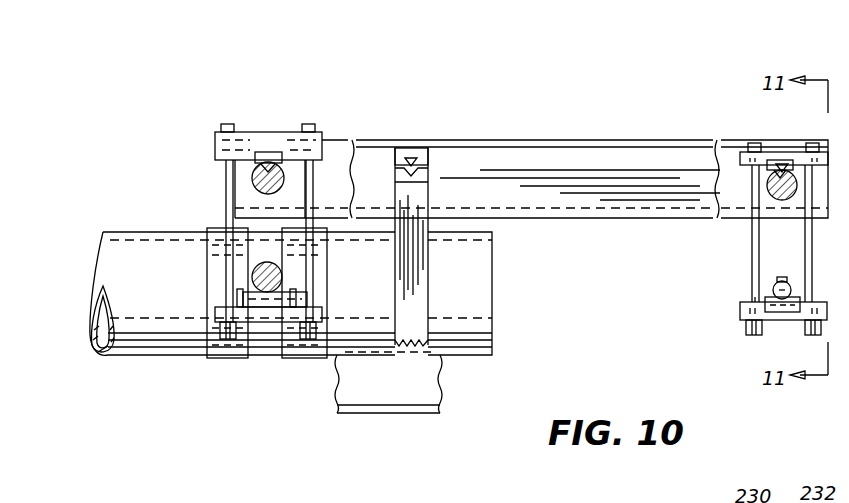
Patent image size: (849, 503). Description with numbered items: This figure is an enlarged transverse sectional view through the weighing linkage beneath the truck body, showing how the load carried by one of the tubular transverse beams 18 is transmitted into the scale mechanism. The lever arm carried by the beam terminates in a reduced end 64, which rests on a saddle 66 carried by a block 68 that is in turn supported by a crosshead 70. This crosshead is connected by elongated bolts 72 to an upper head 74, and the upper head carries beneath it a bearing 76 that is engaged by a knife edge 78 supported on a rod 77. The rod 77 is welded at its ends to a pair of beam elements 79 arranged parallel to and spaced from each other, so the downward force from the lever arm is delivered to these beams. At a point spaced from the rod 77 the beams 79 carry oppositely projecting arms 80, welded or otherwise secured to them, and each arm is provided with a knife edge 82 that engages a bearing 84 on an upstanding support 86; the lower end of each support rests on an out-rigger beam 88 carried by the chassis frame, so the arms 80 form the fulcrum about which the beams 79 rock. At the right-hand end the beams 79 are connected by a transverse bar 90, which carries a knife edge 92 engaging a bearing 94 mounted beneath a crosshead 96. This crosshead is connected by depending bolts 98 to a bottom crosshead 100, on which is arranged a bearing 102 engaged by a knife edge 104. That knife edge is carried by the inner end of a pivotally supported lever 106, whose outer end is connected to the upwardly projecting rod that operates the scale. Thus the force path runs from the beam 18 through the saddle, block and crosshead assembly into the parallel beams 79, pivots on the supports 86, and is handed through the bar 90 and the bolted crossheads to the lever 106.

The transverse beam 18 is at (480, 291).
The reduced end 64 is at (234, 277).
The saddle 66 is at (301, 284).
The block 68 is at (307, 301).
The crosshead 70 is at (215, 311).
The elongated bolt 72 is at (227, 210).
The upper head 74 is at (262, 132).
The bearing 76 is at (272, 152).
The rod 77 is at (251, 184).
The knife edge 78 is at (252, 170).
The beam element 79 is at (571, 140).
The oppositely projecting arm 80 is at (416, 150).
The knife edge 82 is at (416, 152).
The bearing 84 is at (425, 175).
The upstanding support 86 is at (422, 264).
The out-rigger beam 88 is at (386, 414).
The transverse bar 90 is at (767, 181).
The knife edge 92 is at (788, 160).
The bearing 94 is at (776, 160).
The crosshead 96 is at (744, 154).
The depending bolt 98 is at (805, 238).
The bottom crosshead 100 is at (742, 314).
The bearing 102 is at (765, 298).
The knife edge 104 is at (769, 296).
The lever 106 is at (798, 264).